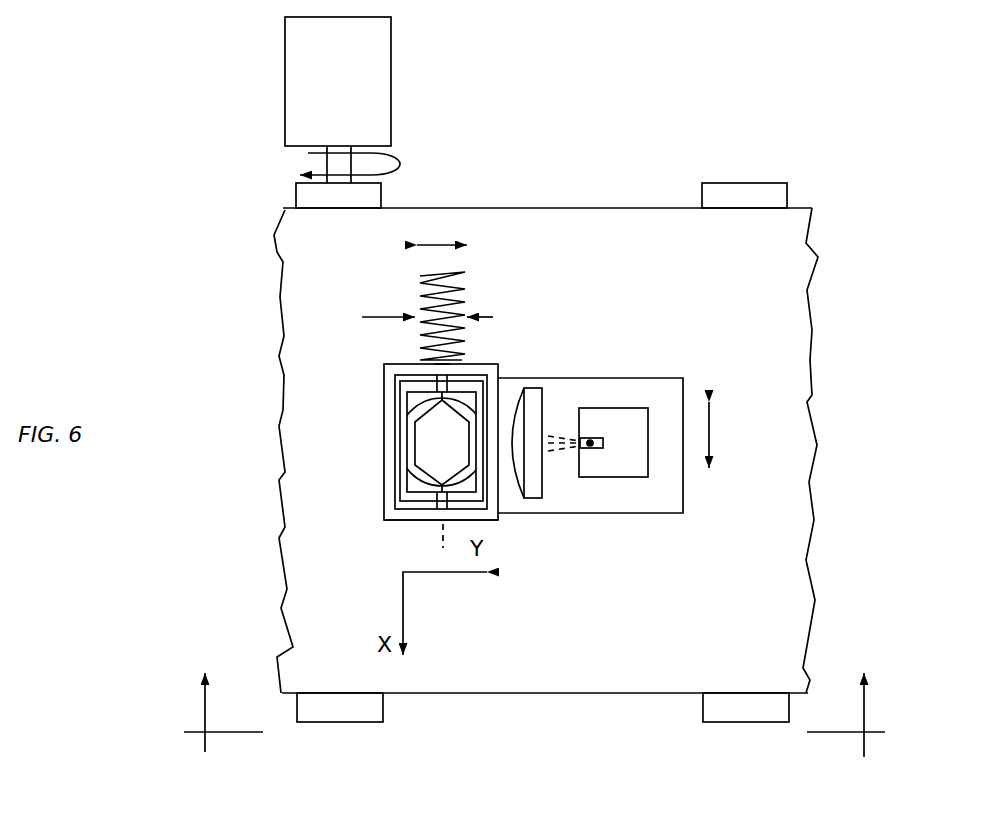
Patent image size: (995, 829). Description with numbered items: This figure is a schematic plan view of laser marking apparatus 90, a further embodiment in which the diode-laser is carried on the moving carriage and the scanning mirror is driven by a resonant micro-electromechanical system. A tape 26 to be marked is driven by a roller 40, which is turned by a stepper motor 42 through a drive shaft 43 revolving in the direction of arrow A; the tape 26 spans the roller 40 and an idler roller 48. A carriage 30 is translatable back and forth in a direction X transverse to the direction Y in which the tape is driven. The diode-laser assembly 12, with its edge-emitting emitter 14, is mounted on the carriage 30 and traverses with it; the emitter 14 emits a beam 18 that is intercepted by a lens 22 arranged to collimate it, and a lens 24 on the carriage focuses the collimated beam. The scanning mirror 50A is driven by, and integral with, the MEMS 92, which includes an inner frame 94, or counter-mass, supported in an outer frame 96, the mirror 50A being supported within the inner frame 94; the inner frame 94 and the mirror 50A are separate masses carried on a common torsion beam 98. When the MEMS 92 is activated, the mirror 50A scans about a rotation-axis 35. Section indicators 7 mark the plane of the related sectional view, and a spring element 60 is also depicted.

The laser marking apparatus 90 is at (198, 210).
The micro-electromechanical system 92 is at (378, 400).
The inner frame 94 is at (406, 470).
The outer frame 96 is at (391, 483).
The torsion beam 98 is at (440, 380).
The scanning mirror 50A is at (437, 467).
The lens 24 is at (415, 519).
The rotation-axis 35 is at (440, 533).
The lens 22 is at (537, 388).
The beam 18 is at (557, 425).
The diode-laser assembly 12 is at (598, 400).
The emitter 14 is at (597, 449).
The tape 26 is at (752, 455).
The carriage 30 is at (690, 483).
The roller 40 is at (302, 197).
The stepper motor 42 is at (302, 80).
The drive shaft 43 is at (338, 152).
The idler roller 48 is at (775, 190).
The spring 60 is at (413, 292).
The section line 7 is at (534, 718).